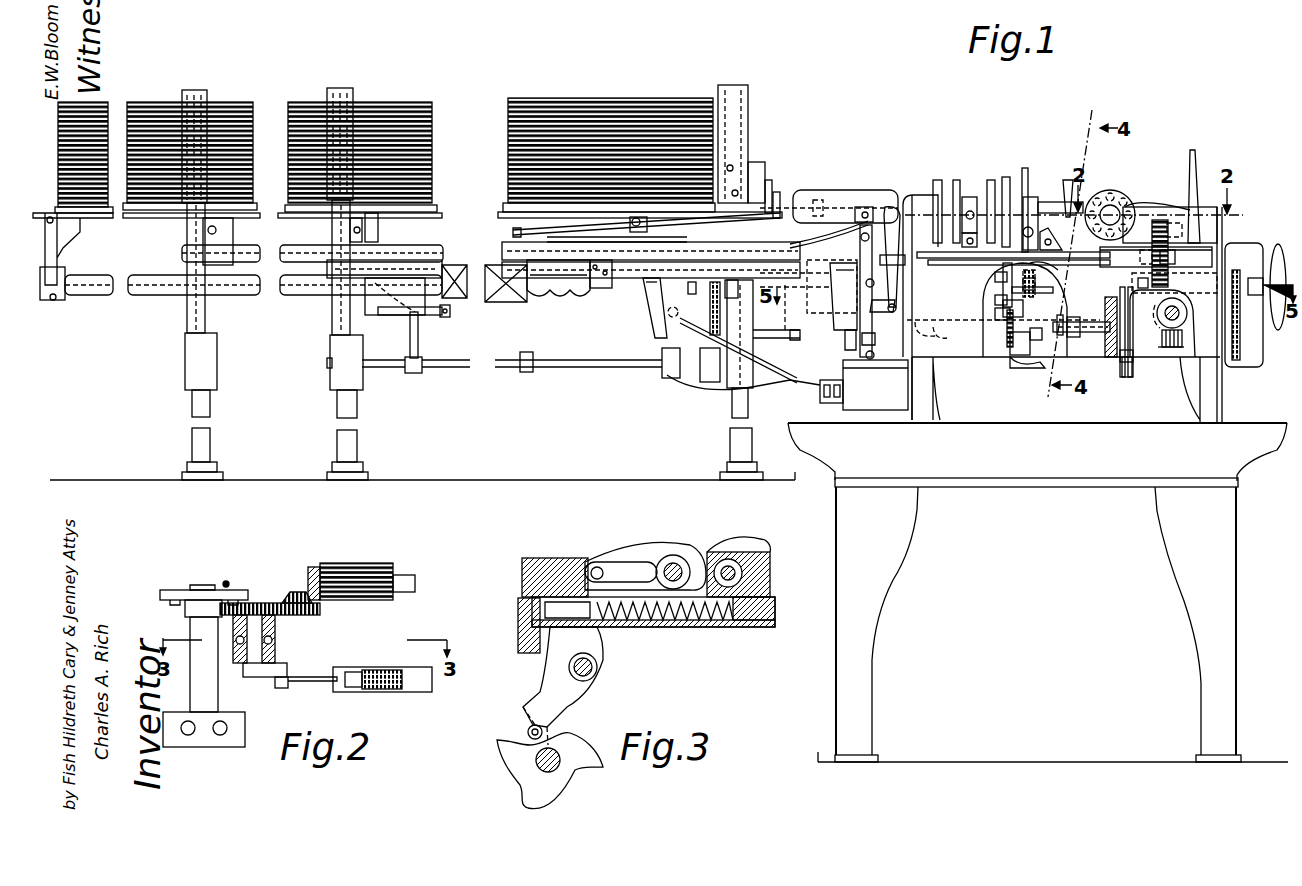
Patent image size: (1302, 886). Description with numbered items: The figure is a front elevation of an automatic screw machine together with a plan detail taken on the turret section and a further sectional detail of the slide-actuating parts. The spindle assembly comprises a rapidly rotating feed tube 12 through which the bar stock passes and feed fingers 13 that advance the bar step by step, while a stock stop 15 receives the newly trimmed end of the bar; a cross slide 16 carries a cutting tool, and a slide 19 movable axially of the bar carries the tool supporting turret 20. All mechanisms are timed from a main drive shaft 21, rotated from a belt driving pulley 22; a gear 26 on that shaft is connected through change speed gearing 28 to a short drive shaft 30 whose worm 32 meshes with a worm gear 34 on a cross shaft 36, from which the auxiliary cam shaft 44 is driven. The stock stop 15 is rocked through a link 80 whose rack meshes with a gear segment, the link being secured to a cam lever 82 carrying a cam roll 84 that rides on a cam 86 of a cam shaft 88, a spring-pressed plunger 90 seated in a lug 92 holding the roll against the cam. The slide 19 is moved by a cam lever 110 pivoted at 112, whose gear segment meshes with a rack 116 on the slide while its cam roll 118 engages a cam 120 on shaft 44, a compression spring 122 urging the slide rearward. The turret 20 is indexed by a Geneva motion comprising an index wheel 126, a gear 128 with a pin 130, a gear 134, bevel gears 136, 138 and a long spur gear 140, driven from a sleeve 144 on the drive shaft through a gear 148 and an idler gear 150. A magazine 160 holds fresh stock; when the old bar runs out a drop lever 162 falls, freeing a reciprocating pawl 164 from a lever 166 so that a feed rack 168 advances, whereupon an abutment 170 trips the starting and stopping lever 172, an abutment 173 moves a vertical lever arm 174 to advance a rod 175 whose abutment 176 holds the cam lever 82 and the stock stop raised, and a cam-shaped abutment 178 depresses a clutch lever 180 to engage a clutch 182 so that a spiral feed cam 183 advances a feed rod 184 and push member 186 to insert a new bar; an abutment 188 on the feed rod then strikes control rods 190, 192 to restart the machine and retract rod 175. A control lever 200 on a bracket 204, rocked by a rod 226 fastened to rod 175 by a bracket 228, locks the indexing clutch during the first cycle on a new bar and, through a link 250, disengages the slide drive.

In FIG. 1, the feed tube 12 is at (845, 215).
In FIG. 1, the feed fingers 13 is at (998, 192).
In FIG. 1, the stock stop 15 is at (1067, 180).
In FIG. 1, the cross slide 16 is at (1057, 236).
In FIG. 1, the slide 19 is at (1138, 200).
In FIG. 2, the slide 19 is at (405, 670).
In FIG. 3, the slide 19 is at (580, 562).
In FIG. 1, the tool supporting turret 20 is at (1120, 190).
In FIG. 2, the tool supporting turret 20 is at (200, 740).
In FIG. 3, the tool supporting turret 20 is at (742, 546).
In FIG. 1, the main drive shaft 21 is at (1138, 283).
In FIG. 1, the belt driving pulley 22 is at (798, 337).
In FIG. 1, the gear 26 is at (1232, 252).
In FIG. 1, the change speed gearing 28 is at (1237, 362).
In FIG. 1, the short drive shaft 30 is at (1180, 350).
In FIG. 1, the worm 32 is at (1164, 337).
In FIG. 1, the worm gear 34 is at (1160, 312).
In FIG. 1, the cross shaft 36 is at (1180, 314).
In FIG. 3, the auxiliary cam shaft 44 is at (578, 782).
In FIG. 1, the link 80 is at (1053, 265).
In FIG. 1, the cam lever 82 is at (1003, 311).
In FIG. 1, the cam roll 84 is at (1005, 302).
In FIG. 1, the cam 86 is at (1003, 277).
In FIG. 1, the cam shaft 88 is at (1035, 283).
In FIG. 1, the spring-pressed plunger 90 is at (1010, 340).
In FIG. 1, the lug 92 is at (1017, 360).
In FIG. 3, the cam lever 110 is at (587, 642).
In FIG. 3, the pivot 112 is at (590, 672).
In FIG. 2, the rack 116 is at (387, 695).
In FIG. 3, the rack 116 is at (522, 575).
In FIG. 3, the cam roll 118 is at (528, 728).
In FIG. 3, the cam 120 is at (568, 740).
In FIG. 3, the compression spring 122 is at (698, 628).
In FIG. 2, the index wheel 126 is at (180, 590).
In FIG. 2, the gear 128 is at (272, 640).
In FIG. 2, the pin 130 is at (240, 598).
In FIG. 2, the gear 134 is at (322, 610).
In FIG. 2, the bevel gear 136 is at (295, 593).
In FIG. 2, the bevel gear 138 is at (308, 570).
In FIG. 1, the spur gear 140 is at (1168, 225).
In FIG. 2, the spur gear 140 is at (362, 565).
In FIG. 1, the sleeve 144 is at (1165, 285).
In FIG. 1, the gear 148 is at (1168, 260).
In FIG. 1, the idler gear 150 is at (1140, 258).
In FIG. 1, the magazine 160 is at (770, 95).
In FIG. 1, the drop lever 162 is at (785, 192).
In FIG. 1, the reciprocating pawl 164 is at (632, 226).
In FIG. 1, the lever 166 is at (513, 233).
In FIG. 1, the feed rack 168 is at (840, 225).
In FIG. 1, the abutment 170 is at (849, 283).
In FIG. 1, the starting and stopping lever 172 is at (900, 260).
In FIG. 1, the abutment 173 is at (878, 310).
In FIG. 1, the vertical lever arm 174 is at (868, 333).
In FIG. 1, the rod 175 is at (933, 328).
In FIG. 1, the abutment 176 is at (1044, 322).
In FIG. 1, the cam-shaped abutment 178 is at (613, 288).
In FIG. 1, the clutch lever 180 is at (655, 300).
In FIG. 1, the clutch 182 is at (692, 294).
In FIG. 1, the spiral feed cam 183 is at (565, 293).
In FIG. 1, the feed rod 184 is at (102, 287).
In FIG. 1, the push member 186 is at (58, 248).
In FIG. 1, the abutment 188 is at (442, 312).
In FIG. 1, the control rod 190 is at (845, 345).
In FIG. 1, the control rod 192 is at (820, 388).
In FIG. 1, the control lever 200 is at (1130, 356).
In FIG. 1, the bracket 204 is at (1106, 356).
In FIG. 1, the rod 226 is at (1098, 330).
In FIG. 1, the bracket 228 is at (1062, 320).
In FIG. 1, the link 250 is at (1127, 378).